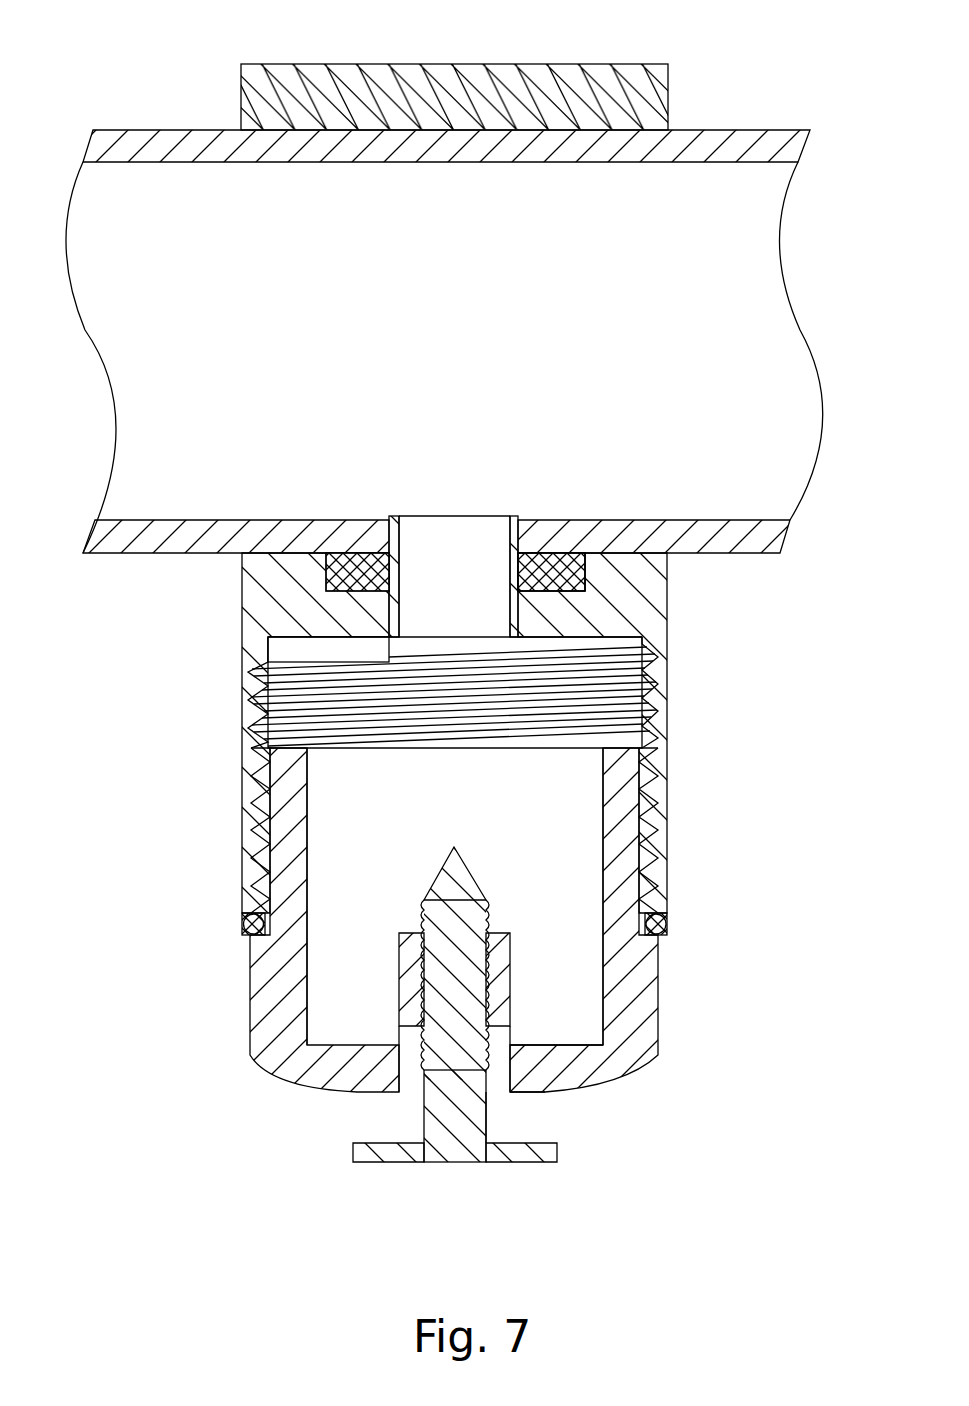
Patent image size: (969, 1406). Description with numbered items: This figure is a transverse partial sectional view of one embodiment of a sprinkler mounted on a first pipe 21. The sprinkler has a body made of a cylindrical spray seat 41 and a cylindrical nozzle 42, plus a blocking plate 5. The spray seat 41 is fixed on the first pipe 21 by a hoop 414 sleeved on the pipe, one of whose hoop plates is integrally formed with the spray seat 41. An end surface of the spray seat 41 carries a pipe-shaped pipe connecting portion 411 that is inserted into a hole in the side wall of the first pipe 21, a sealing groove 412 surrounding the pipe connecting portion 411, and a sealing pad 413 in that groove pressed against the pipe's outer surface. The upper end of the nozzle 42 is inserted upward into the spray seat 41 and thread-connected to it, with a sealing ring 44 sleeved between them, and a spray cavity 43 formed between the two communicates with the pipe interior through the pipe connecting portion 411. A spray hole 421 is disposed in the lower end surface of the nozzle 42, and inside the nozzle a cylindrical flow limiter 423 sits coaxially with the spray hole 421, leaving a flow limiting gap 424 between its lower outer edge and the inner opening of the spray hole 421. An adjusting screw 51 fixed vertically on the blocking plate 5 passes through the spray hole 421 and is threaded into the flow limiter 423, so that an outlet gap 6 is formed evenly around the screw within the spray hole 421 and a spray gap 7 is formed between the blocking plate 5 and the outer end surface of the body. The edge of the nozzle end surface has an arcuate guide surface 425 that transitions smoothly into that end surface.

The first pipe 21 is at (230, 147).
The hoop 414 is at (563, 108).
The spray seat 41 is at (293, 599).
The pipe connecting portion 411 is at (395, 532).
The sealing groove 412 is at (585, 572).
The sealing pad 413 is at (553, 578).
The nozzle 42 is at (300, 1060).
The spray cavity 43 is at (363, 852).
The sealing ring 44 is at (677, 916).
The flow limiter 423 is at (415, 983).
The flow limiting gap 424 is at (512, 1033).
The guide surface 425 is at (612, 1082).
The spray hole 421 is at (510, 1068).
The blocking plate 5 is at (398, 1157).
The adjusting screw 51 is at (460, 1058).
The outlet gap 6 is at (500, 1072).
The spray gap 7 is at (532, 1122).